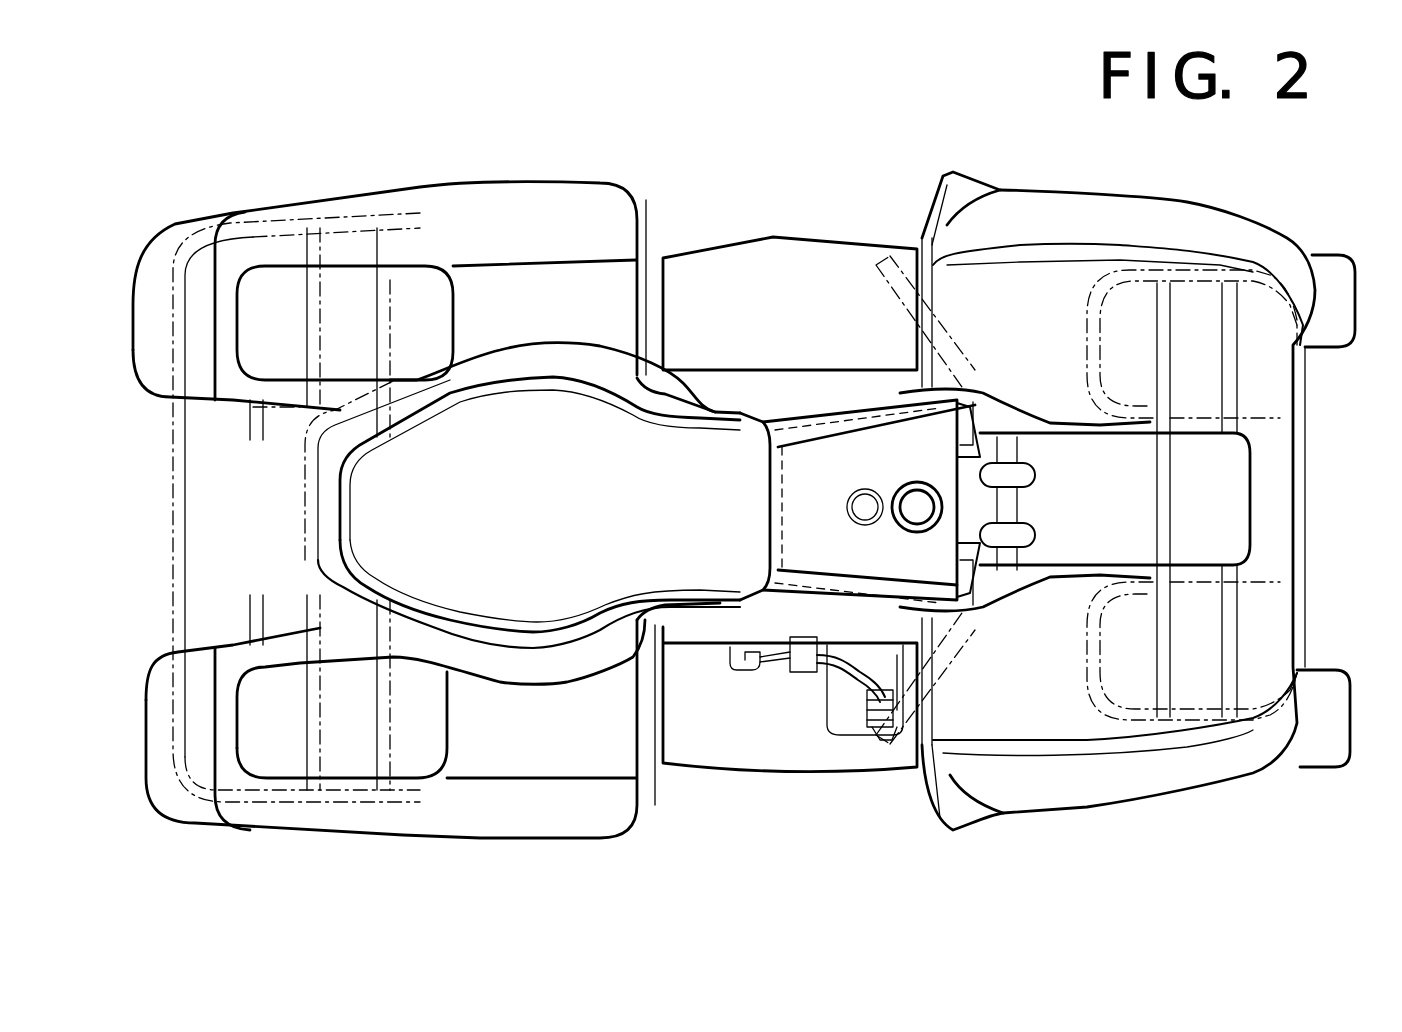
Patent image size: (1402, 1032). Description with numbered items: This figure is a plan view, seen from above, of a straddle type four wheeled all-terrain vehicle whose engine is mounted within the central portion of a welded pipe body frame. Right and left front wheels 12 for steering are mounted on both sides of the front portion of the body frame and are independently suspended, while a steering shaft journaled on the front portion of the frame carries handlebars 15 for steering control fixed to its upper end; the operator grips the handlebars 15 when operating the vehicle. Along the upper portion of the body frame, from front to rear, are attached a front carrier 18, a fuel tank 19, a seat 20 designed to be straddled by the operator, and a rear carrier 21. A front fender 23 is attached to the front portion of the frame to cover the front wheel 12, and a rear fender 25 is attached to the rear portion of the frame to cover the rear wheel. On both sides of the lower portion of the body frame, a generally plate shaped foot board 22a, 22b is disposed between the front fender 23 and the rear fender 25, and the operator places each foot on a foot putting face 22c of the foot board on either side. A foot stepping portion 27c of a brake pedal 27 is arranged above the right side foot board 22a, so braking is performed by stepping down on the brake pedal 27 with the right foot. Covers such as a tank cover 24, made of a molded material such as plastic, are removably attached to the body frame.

The front wheel 12 is at (1333, 330).
The handlebars 15 is at (967, 640).
The front carrier 18 is at (1250, 722).
The fuel tank 19 is at (785, 607).
The seat 20 is at (645, 472).
The rear carrier 21 is at (283, 797).
The right side foot board 22a is at (693, 773).
The foot board 22b is at (773, 239).
The foot putting face 22c is at (848, 270).
The front fender 23 is at (1117, 787).
The tank cover 24 is at (855, 692).
The rear fender 25 is at (407, 822).
The brake pedal 27 is at (867, 615).
The foot stepping portion 27c is at (887, 740).